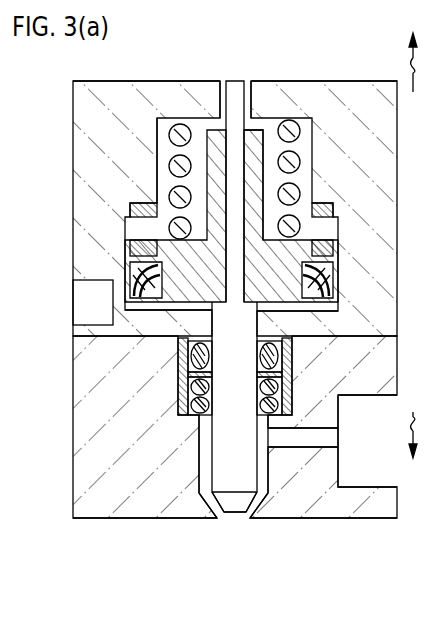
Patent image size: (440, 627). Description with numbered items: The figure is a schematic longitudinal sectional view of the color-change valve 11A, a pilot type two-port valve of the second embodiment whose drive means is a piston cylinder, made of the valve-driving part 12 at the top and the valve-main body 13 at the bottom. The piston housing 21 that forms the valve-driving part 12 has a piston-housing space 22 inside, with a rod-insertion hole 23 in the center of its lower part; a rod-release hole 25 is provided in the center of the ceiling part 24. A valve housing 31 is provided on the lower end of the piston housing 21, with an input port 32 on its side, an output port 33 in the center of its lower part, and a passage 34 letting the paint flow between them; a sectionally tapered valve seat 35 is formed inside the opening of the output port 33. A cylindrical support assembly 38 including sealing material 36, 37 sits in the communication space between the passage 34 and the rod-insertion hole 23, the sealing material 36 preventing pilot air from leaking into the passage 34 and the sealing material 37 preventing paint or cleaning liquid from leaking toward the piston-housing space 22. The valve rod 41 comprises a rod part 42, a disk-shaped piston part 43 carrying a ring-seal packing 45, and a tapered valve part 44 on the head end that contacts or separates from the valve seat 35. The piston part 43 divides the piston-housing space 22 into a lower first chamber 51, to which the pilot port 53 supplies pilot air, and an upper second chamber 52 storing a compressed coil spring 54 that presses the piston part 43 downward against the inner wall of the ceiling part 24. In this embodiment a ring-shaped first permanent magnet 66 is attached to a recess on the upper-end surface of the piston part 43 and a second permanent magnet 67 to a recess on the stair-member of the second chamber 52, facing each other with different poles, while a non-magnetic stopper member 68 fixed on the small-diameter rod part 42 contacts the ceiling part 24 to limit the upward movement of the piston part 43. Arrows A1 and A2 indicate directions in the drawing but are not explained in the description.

The color-change valve 11A is at (387, 63).
The valve-driving part 12 is at (72, 130).
The valve-main body 13 is at (72, 490).
The piston housing 21 is at (386, 122).
The piston-housing space 22 is at (157, 150).
The rod-insertion hole 23 is at (244, 322).
The ceiling part 24 is at (178, 87).
The rod-release hole 25 is at (218, 85).
The valve housing 31 is at (92, 424).
The input port 32 is at (366, 482).
The output port 33 is at (247, 516).
The passage 34 is at (247, 461).
The valve seat 35 is at (216, 512).
The sealing material 36 is at (189, 360).
The sealing material 37 is at (188, 382).
The cylindrical support assembly 38 is at (284, 354).
The valve rod 41 is at (245, 80).
The rod part 42 is at (248, 446).
The piston part 43 is at (209, 285).
The valve part 44 is at (228, 512).
The ring-seal packing 45 is at (335, 273).
The first chamber 51 is at (144, 311).
The second chamber 52 is at (158, 181).
The pilot port 53 is at (100, 292).
The coil spring 54 is at (291, 162).
The first permanent magnet 66 is at (127, 247).
The second permanent magnet 67 is at (127, 207).
The stopper member 68 is at (258, 144).
The flow direction A1 is at (419, 70).
The flow direction A2 is at (416, 417).